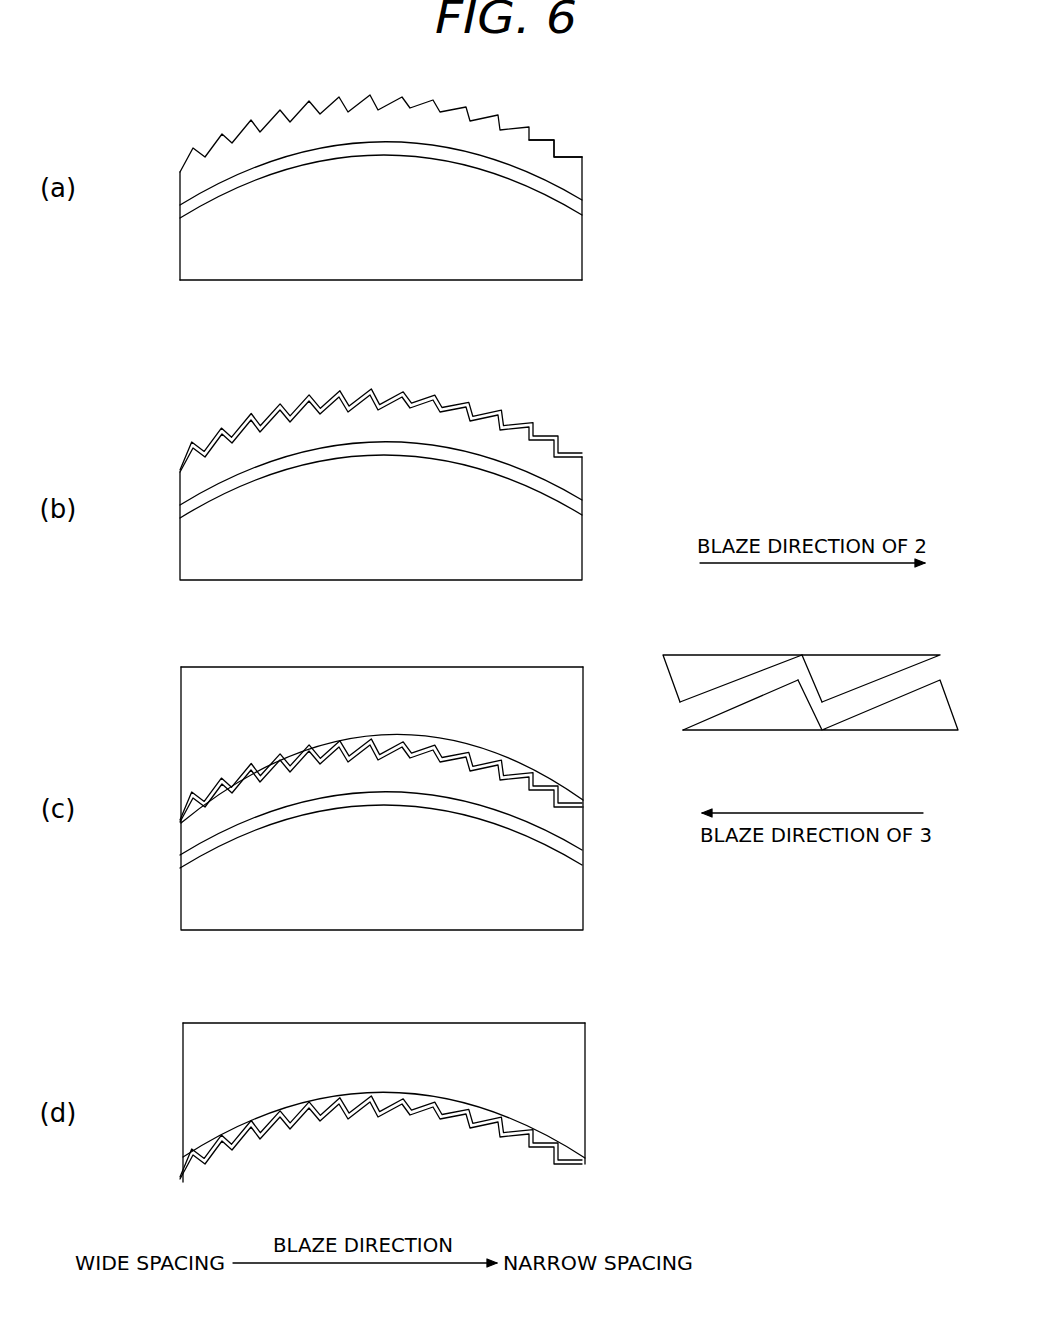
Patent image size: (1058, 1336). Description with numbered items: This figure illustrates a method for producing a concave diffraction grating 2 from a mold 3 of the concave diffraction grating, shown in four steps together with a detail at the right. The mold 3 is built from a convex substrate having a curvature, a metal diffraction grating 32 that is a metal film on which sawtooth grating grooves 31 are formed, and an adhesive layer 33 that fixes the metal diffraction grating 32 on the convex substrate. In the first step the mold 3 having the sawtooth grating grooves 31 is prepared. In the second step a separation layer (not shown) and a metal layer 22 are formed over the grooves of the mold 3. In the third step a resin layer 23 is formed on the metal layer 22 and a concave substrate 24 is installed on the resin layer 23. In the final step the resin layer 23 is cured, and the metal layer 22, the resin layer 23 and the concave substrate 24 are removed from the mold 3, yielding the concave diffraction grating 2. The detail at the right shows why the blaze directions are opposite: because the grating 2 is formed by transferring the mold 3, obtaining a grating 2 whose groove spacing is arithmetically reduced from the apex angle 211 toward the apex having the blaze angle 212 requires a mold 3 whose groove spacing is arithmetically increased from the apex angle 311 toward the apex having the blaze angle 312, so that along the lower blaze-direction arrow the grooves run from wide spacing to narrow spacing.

The concave diffraction grating 2 is at (178, 724).
The mold of the concave diffraction grating 3 is at (175, 146).
The metal layer 22 is at (360, 400).
The resin layer 23 is at (513, 765).
The concave substrate 24 is at (340, 692).
The grating groove 31 is at (297, 110).
The metal diffraction grating 32 is at (537, 163).
The adhesive layer 33 is at (523, 267).
The apex angle 211 is at (690, 693).
The blaze angle 212 is at (780, 658).
The apex angle 311 is at (797, 690).
The blaze angle 312 is at (702, 727).